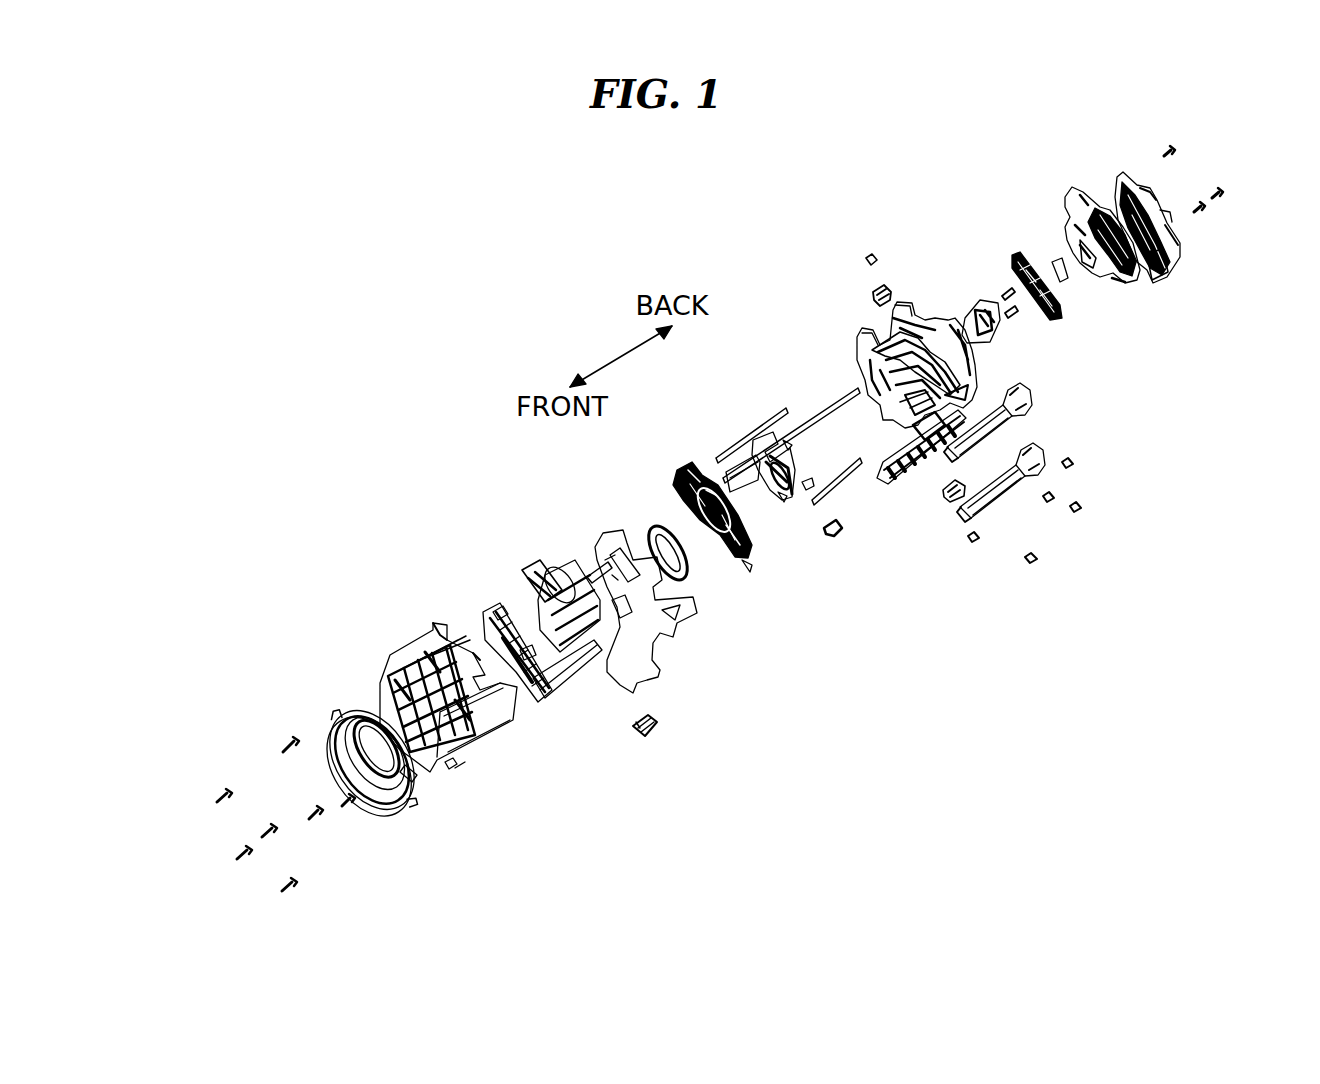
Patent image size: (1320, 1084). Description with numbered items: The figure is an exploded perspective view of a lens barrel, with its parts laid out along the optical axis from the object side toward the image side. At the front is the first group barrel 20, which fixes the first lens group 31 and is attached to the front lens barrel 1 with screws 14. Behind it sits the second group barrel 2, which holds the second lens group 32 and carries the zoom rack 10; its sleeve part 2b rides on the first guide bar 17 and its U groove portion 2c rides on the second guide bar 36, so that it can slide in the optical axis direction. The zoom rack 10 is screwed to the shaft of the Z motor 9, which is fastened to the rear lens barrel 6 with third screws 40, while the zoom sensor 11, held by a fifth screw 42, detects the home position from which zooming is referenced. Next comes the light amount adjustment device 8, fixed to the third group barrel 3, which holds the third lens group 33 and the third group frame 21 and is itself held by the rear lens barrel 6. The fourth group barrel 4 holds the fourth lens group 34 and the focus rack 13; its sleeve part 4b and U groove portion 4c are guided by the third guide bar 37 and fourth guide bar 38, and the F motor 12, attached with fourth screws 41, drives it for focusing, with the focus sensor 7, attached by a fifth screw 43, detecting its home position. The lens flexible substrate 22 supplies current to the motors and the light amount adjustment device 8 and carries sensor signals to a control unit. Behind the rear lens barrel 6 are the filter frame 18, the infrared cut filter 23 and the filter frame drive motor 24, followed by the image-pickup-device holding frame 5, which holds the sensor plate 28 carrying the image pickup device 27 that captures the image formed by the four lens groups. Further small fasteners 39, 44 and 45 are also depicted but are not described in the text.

The front lens barrel 1 is at (385, 676).
The second group barrel 2 is at (488, 618).
The sleeve part 2b is at (588, 660).
The U groove portion 2c is at (500, 610).
The third group barrel 3 is at (678, 465).
The fourth group barrel 4 is at (760, 492).
The sleeve part 4b is at (788, 445).
The U groove portion 4c is at (782, 497).
The image-pickup-device holding frame 5 is at (1068, 188).
The rear lens barrel 6 is at (858, 334).
The focus sensor 7 is at (872, 295).
The light amount adjustment device 8 is at (526, 568).
The zoom drive motor (Z motor) 9 is at (1043, 452).
The zoom rack 10 is at (645, 738).
The zoom sensor 11 is at (945, 495).
The focus drive motor (F motor) 12 is at (1032, 398).
The focus rack 13 is at (840, 535).
The screws 14 is at (262, 834).
The first guide bar 17 is at (848, 462).
The filter frame (holding member) 18 is at (1010, 255).
The first group barrel 20 is at (338, 722).
The third group frame 21 is at (654, 530).
The lens flexible substrate 22 is at (660, 678).
The infrared cut filter 23 is at (1055, 262).
The filter frame drive motor (frame motor) 24 is at (975, 305).
The image pickup device 27 is at (1165, 215).
The sensor plate 28 is at (1125, 176).
The first lens group 31 is at (412, 770).
The second lens group 32 is at (525, 655).
The third lens group 33 is at (748, 568).
The fourth lens group 34 is at (790, 452).
The second guide bar 36 is at (740, 442).
The third guide bar 37 is at (840, 402).
The fourth guide bar 38 is at (808, 488).
The screws 39 is at (312, 810).
The third screws 40 is at (1035, 558).
The fourth screws 41 is at (1053, 497).
The fifth screw 42 is at (973, 542).
The fifth screw 43 is at (866, 256).
The pins 44 is at (1002, 292).
The screws 45 is at (1200, 205).